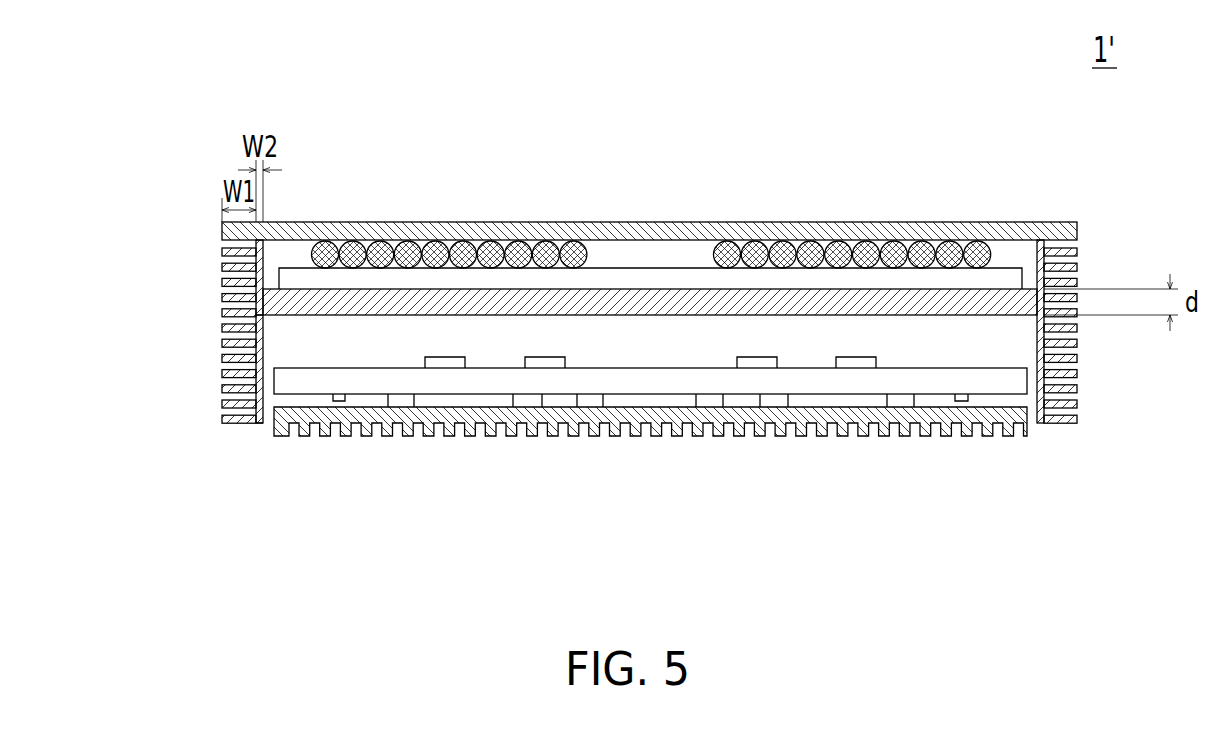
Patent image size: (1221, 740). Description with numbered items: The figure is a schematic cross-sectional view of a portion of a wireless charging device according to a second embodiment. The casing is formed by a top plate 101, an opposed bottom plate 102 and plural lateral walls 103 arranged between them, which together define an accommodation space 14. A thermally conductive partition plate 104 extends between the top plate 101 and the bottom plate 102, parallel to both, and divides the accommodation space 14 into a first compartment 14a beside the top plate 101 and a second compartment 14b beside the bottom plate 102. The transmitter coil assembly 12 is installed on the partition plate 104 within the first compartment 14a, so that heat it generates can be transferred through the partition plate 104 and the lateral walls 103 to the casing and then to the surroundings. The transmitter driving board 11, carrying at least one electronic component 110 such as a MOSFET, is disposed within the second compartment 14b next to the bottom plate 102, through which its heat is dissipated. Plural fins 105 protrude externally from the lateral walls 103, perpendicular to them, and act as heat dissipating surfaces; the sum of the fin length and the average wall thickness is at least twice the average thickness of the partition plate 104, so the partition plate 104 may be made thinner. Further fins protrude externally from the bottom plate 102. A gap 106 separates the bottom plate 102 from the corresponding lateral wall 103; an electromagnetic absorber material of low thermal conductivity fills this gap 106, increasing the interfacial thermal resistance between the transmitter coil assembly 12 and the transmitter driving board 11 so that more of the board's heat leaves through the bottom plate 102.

The top plate 101 is at (367, 232).
The partition plate 104 is at (450, 297).
The transmitter coil assembly 12 is at (550, 242).
The electronic component 110 is at (753, 362).
The fins 105 is at (225, 251).
The lateral walls 103 is at (1065, 330).
The accommodation space 14 is at (639, 331).
The first compartment 14a is at (272, 281).
The second compartment 14b is at (285, 353).
The transmitter driving board 11 is at (985, 375).
The bottom plate 102 is at (357, 423).
The gap 106 is at (266, 444).